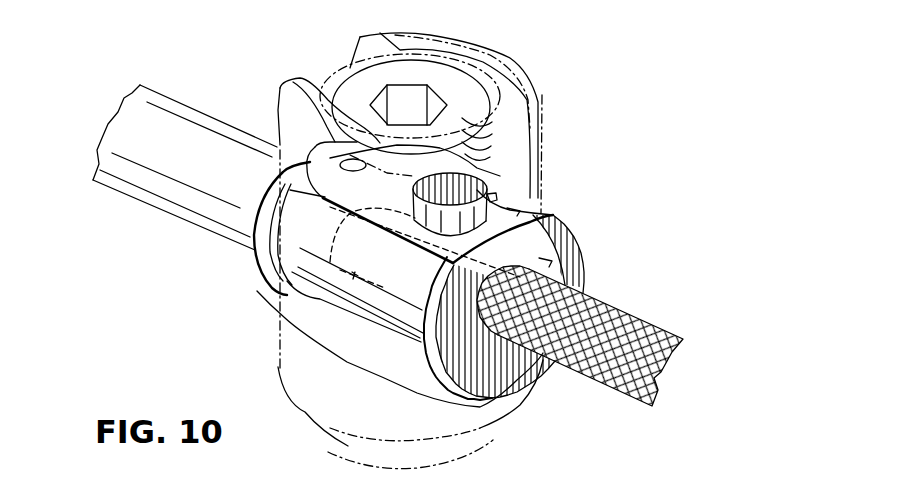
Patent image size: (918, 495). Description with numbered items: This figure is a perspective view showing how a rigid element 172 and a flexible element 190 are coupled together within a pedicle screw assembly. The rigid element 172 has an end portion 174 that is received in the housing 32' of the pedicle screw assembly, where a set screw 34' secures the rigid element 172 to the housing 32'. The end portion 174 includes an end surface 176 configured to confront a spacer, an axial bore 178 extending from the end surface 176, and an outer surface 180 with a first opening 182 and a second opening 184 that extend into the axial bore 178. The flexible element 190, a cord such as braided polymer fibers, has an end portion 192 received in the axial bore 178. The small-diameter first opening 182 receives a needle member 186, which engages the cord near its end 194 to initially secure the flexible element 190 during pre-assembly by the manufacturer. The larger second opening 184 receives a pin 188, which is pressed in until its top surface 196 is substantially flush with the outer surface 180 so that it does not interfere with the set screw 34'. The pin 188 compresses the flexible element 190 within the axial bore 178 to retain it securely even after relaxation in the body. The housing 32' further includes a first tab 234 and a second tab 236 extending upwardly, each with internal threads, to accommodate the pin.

The rigid element 172 is at (138, 203).
The end portion 174 is at (351, 365).
The end surface 176 is at (552, 263).
The axial bore 178 is at (540, 362).
The outer surface 180 is at (497, 220).
The first opening 182 is at (370, 160).
The second opening 184 is at (408, 232).
The needle member 186 is at (327, 150).
The pin 188 is at (490, 197).
The flexible element 190 is at (656, 327).
The end portion 192 is at (358, 313).
The end 194 is at (254, 258).
The top surface 196 is at (477, 182).
The first tab 234 is at (538, 100).
The second tab 236 is at (270, 107).
The set screw 34' is at (389, 99).
The housing 32' is at (360, 309).